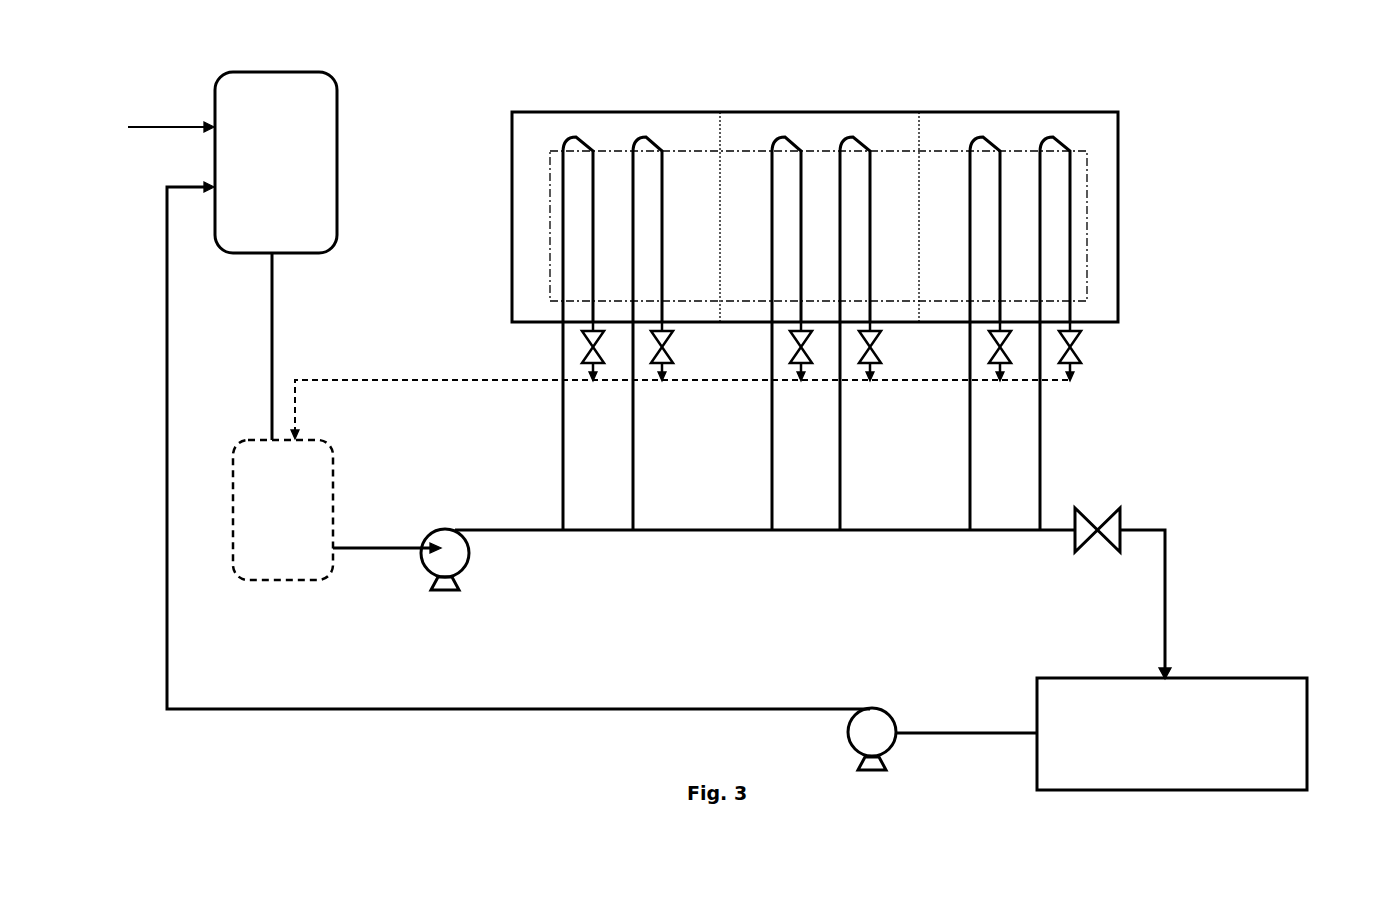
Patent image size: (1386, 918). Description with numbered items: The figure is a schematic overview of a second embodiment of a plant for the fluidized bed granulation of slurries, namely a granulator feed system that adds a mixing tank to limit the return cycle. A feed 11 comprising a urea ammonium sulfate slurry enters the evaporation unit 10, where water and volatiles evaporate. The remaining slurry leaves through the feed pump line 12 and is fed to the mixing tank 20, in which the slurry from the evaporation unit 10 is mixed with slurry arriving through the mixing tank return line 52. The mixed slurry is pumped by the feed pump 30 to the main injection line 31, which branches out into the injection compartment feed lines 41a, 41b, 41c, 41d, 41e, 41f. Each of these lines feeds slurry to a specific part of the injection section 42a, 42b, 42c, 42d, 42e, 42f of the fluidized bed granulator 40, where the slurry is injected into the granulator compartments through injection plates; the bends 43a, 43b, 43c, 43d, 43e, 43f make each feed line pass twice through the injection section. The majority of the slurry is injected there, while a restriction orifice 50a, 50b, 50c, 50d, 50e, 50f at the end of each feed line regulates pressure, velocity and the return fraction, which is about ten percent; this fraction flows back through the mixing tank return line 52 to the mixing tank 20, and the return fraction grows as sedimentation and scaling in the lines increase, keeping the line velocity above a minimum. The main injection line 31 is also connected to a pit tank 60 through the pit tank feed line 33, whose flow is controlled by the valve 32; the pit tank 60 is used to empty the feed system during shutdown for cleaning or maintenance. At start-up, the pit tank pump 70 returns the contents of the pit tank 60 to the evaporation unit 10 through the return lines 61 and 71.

The evaporation unit 10 is at (276, 162).
The feed 11 is at (171, 109).
The feed pump line 12 is at (290, 346).
The mixing tank 20 is at (283, 510).
The feed pump 30 is at (401, 559).
The main injection line 31 is at (765, 551).
The valve 32 is at (1097, 538).
The pit tank feed line 33 is at (1162, 604).
The fluidized bed granulator 40 is at (815, 196).
The injection compartment feed line 41a is at (548, 426).
The injection compartment feed line 41b is at (613, 426).
The injection compartment feed line 41c is at (753, 426).
The injection compartment feed line 41d is at (826, 426).
The injection compartment feed line 41e is at (960, 426).
The injection compartment feed line 41f is at (1026, 426).
The injection section 42a is at (556, 235).
The injection section 42b is at (711, 235).
The injection section 42c is at (762, 235).
The injection section 42d is at (911, 235).
The injection section 42e is at (961, 235).
The injection section 42f is at (1036, 235).
The bend 43a is at (599, 219).
The bend 43b is at (673, 219).
The bend 43c is at (811, 219).
The bend 43d is at (881, 219).
The bend 43e is at (1008, 219).
The bend 43f is at (1076, 219).
The restriction orifice 50a is at (578, 351).
The restriction orifice 50b is at (693, 351).
The restriction orifice 50c is at (828, 351).
The restriction orifice 50d is at (900, 351).
The restriction orifice 50e is at (1031, 351).
The restriction orifice 50f is at (1097, 351).
The mixing tank return line 52 is at (679, 396).
The pit tank 60 is at (1172, 734).
The return line 61 is at (966, 718).
The pit tank pump 70 is at (872, 739).
The return line 71 is at (518, 445).